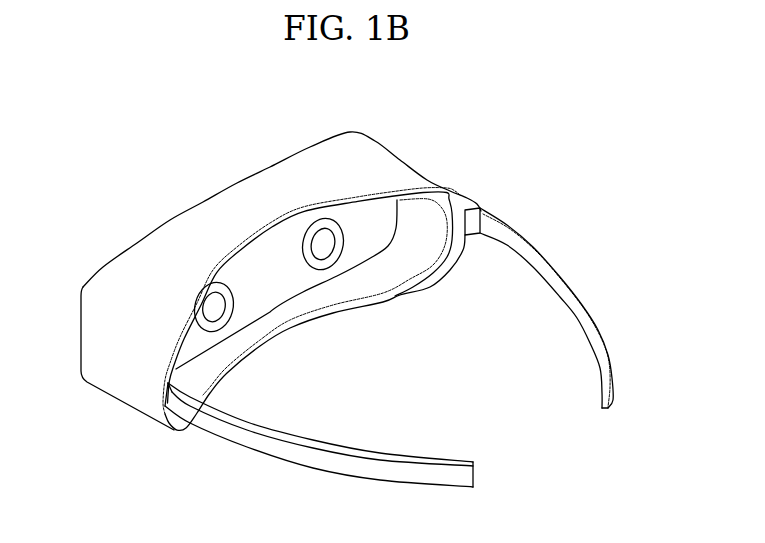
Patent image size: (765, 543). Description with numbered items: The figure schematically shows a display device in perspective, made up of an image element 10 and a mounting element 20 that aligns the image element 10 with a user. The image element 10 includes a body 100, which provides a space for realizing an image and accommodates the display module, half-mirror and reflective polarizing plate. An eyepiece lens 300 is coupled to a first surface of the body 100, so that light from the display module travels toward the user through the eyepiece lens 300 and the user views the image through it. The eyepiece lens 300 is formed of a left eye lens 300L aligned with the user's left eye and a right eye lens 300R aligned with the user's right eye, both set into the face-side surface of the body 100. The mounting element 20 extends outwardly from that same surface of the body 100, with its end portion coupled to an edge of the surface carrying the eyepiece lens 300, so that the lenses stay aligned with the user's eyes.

The image element 10 is at (421, 147).
The body 100 is at (206, 218).
The mounting element 20 is at (583, 260).
The eyepiece lens 300 is at (402, 338).
The right eye lens 300R is at (322, 250).
The left eye lens 300L is at (218, 312).